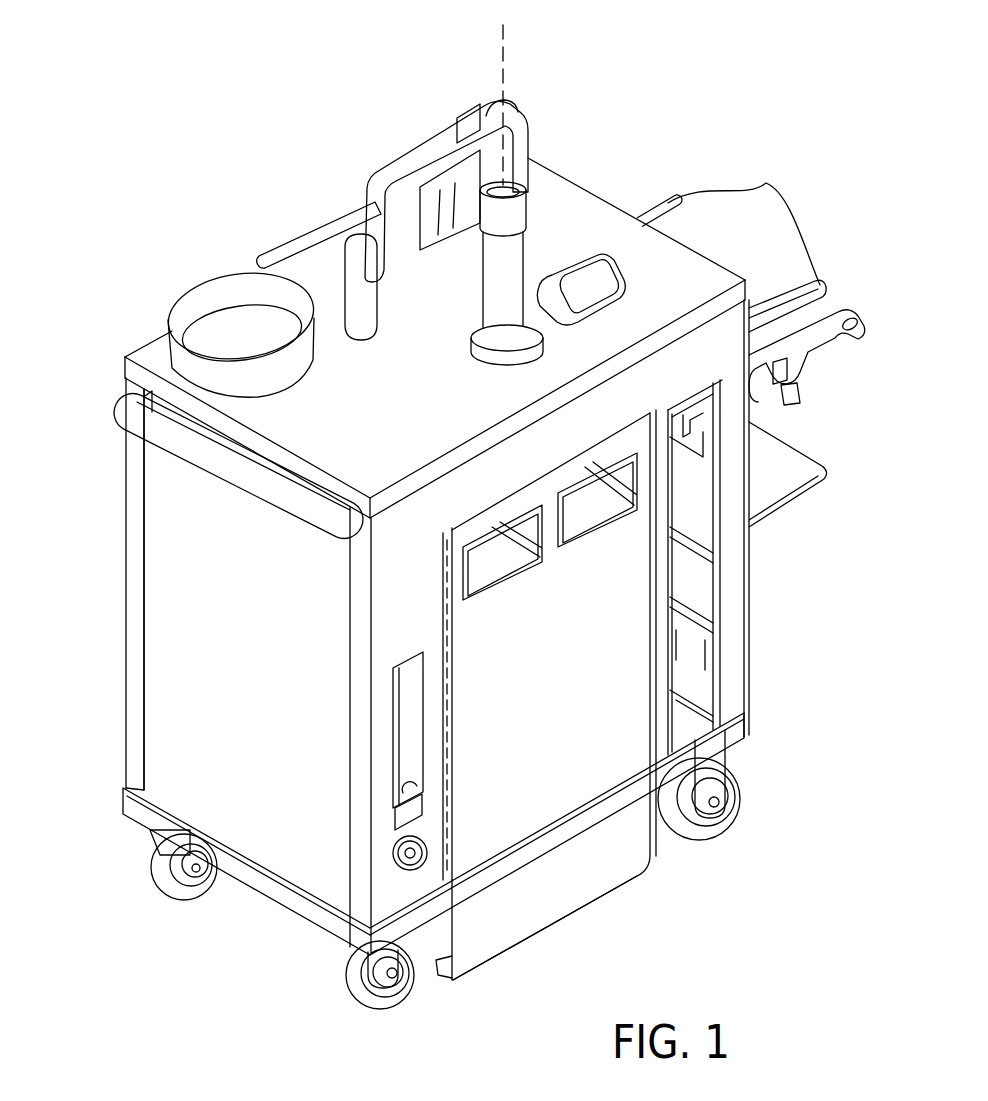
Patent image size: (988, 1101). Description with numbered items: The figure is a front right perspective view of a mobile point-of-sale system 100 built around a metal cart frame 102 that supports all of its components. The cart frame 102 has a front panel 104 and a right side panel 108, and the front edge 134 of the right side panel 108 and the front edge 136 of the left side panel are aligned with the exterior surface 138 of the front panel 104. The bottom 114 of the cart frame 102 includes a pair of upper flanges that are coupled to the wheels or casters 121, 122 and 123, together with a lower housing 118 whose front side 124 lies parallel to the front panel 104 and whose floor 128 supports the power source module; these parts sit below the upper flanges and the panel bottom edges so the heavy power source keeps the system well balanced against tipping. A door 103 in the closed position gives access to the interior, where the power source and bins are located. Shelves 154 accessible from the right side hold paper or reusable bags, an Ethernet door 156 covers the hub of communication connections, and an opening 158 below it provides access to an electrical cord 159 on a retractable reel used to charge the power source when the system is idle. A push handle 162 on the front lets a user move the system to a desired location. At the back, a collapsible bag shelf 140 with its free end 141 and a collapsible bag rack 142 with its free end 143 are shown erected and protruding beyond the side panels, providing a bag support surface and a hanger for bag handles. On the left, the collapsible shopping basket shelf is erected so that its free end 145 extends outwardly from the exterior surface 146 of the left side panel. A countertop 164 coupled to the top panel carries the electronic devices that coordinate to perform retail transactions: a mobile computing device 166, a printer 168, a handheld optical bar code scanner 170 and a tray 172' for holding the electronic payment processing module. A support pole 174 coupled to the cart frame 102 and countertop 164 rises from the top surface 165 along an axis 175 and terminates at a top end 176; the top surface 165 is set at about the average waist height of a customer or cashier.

The mobile POS system 100 is at (196, 157).
The cart frame 102 is at (118, 478).
The door 103 is at (525, 779).
The front panel 104 is at (193, 682).
The right side panel 108 is at (748, 625).
The bottom 114 is at (556, 927).
The lower housing 118 is at (512, 916).
The caster 121 is at (726, 820).
The caster 122 is at (158, 891).
The caster 123 is at (352, 1000).
The front side 124 is at (437, 960).
The floor 128 is at (470, 976).
The front edge 134 is at (358, 710).
The front edge 136 is at (132, 586).
The exterior surface 138 is at (262, 836).
The collapsible bag shelf 140 is at (790, 434).
The free end 141 is at (808, 460).
The collapsible bag rack 142 is at (834, 306).
The free end 143 is at (766, 183).
The free end 145 is at (133, 334).
The exterior surface 146 is at (104, 356).
The shelves 154 is at (690, 668).
The Ethernet door 156 is at (393, 746).
The opening 158 is at (393, 855).
The electrical cord 159 is at (456, 846).
The push handle 162 is at (222, 497).
The countertop 164 is at (693, 249).
The top surface 165 is at (600, 218).
The mobile computing device 166 is at (518, 105).
The printer 168 is at (625, 282).
The handheld optical bar code scanner 170 is at (370, 338).
The tray 172' is at (266, 339).
The support pole 174 is at (493, 290).
The axis 175 is at (502, 50).
The top end 176 is at (555, 187).